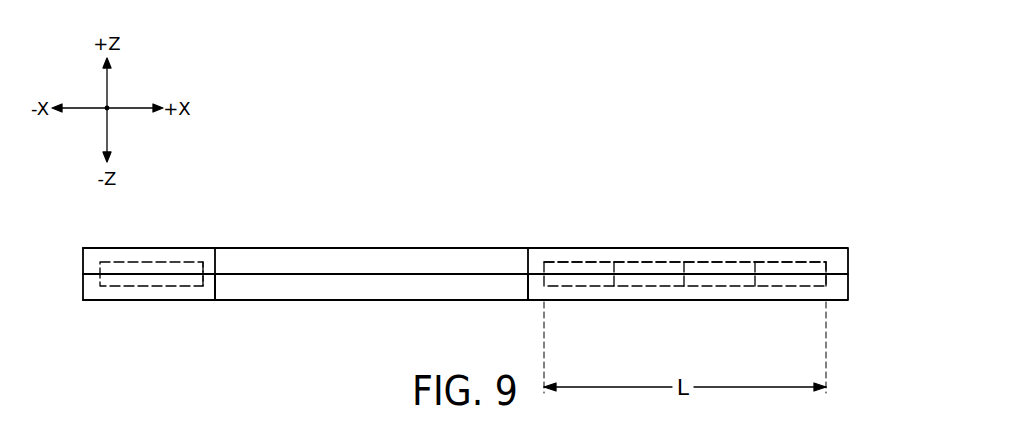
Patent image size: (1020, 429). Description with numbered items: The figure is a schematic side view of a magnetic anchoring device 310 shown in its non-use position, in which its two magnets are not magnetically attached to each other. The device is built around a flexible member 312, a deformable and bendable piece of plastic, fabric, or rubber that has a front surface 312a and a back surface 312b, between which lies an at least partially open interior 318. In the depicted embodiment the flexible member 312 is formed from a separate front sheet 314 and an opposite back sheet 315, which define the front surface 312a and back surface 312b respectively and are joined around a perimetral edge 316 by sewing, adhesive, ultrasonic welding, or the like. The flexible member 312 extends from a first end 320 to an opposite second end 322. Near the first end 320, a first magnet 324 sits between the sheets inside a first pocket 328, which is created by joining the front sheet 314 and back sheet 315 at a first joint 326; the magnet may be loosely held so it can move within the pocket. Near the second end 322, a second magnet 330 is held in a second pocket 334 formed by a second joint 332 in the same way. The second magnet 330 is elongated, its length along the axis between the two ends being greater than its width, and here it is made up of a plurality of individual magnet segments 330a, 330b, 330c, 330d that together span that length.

The magnetic anchoring device 310 is at (667, 220).
The flexible member 312 is at (467, 248).
The front surface 312a is at (412, 248).
The back surface 312b is at (410, 300).
The front sheet 314 is at (103, 251).
The back sheet 315 is at (103, 298).
The perimetral edge 316 is at (433, 276).
The open interior 318 is at (340, 288).
The first end 320 is at (82, 270).
The second end 322 is at (850, 268).
The first magnet 324 is at (152, 262).
The first joint 326 is at (222, 300).
The first pocket 328 is at (191, 258).
The second magnet 330 is at (778, 261).
The individual magnet segment 330a is at (565, 288).
The individual magnet segment 330b is at (633, 288).
The individual magnet segment 330c is at (703, 288).
The individual magnet segment 330d is at (773, 288).
The second joint 332 is at (525, 291).
The second pocket 334 is at (740, 258).